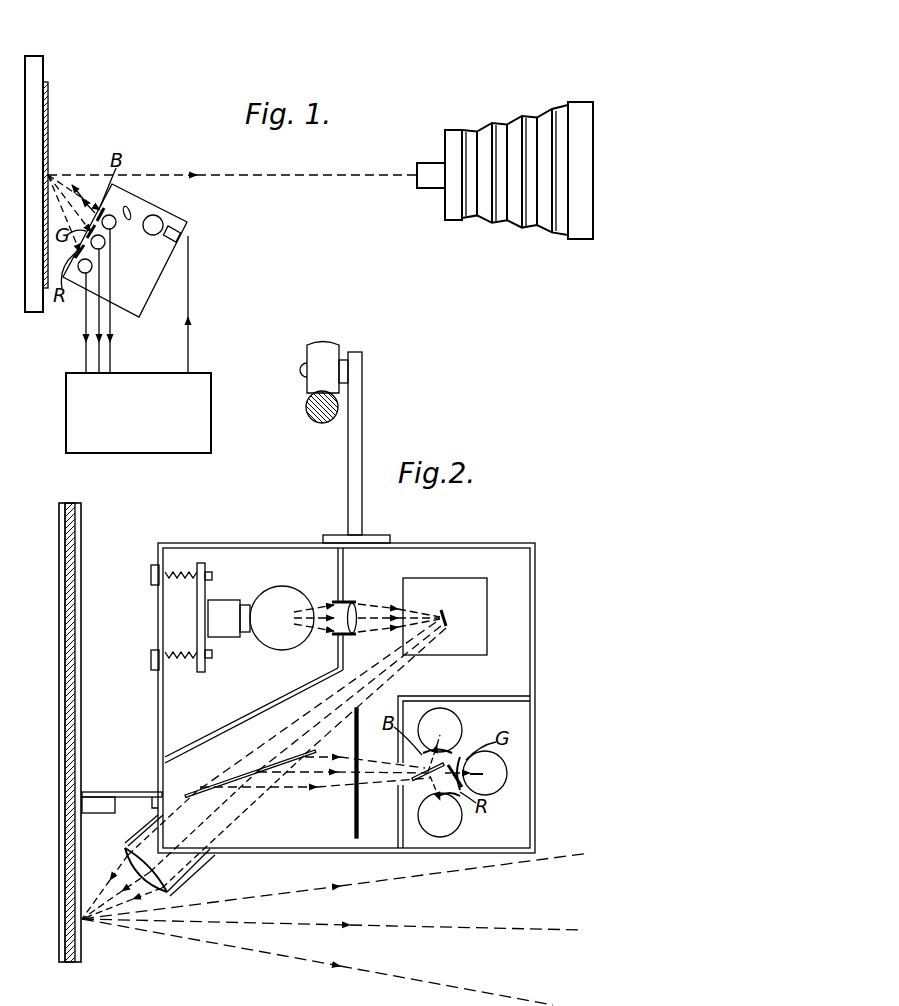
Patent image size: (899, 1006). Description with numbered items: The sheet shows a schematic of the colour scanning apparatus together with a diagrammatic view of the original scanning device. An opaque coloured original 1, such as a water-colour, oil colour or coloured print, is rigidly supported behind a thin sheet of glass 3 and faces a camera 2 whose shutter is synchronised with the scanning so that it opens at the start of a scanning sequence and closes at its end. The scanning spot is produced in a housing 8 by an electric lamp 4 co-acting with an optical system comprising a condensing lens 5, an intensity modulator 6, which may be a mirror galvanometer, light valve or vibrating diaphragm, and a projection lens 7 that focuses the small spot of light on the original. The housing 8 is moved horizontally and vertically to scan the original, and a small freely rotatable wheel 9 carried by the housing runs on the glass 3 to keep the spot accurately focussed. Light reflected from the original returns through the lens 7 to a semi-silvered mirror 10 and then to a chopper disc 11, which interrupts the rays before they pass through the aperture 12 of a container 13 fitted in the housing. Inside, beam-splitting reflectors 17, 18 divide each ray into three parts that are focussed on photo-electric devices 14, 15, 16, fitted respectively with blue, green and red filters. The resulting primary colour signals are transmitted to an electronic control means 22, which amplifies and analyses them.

In FIG. 1, the coloured original 1 is at (47, 123).
In FIG. 2, the coloured original 1 is at (73, 585).
In FIG. 1, the camera 2 is at (488, 126).
In FIG. 2, the thin sheet of glass 3 is at (78, 557).
In FIG. 1, the electric lamp 4 is at (156, 227).
In FIG. 2, the electric lamp 4 is at (270, 598).
In FIG. 2, the condensing lens 5 is at (356, 612).
In FIG. 2, the intensity modulator 6 is at (448, 612).
In FIG. 2, the projection lens 7 is at (136, 860).
In FIG. 2, the housing 8 is at (535, 593).
In FIG. 2, the freely rotatable wheel 9 is at (117, 800).
In FIG. 2, the semi-silvered mirror 10 is at (235, 776).
In FIG. 2, the chopper disc 11 is at (355, 818).
In FIG. 2, the aperture 12 is at (412, 772).
In FIG. 2, the container 13 is at (428, 702).
In FIG. 1, the photo-electric device 14 is at (110, 215).
In FIG. 2, the photo-electric device 14 is at (454, 733).
In FIG. 1, the photo-electric device 15 is at (106, 243).
In FIG. 2, the photo-electric device 15 is at (497, 780).
In FIG. 1, the photo-electric device 16 is at (93, 267).
In FIG. 2, the photo-electric device 16 is at (453, 829).
In FIG. 2, the beam-splitting reflector 17 is at (420, 781).
In FIG. 2, the beam-splitting reflector 18 is at (460, 762).
In FIG. 1, the electronic control means 22 is at (200, 393).